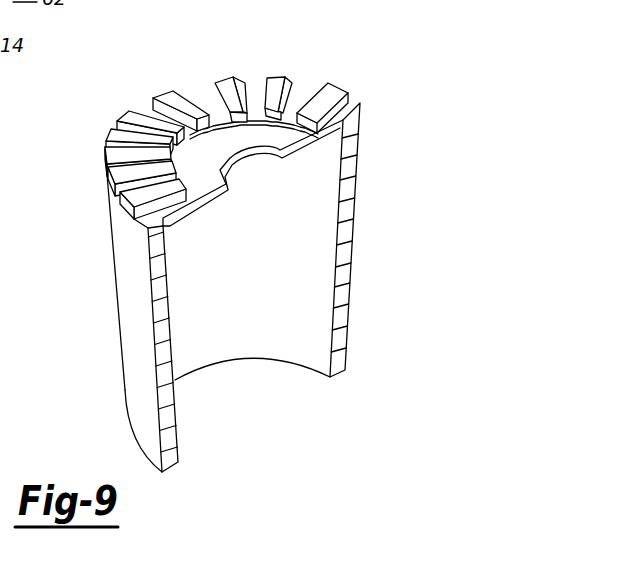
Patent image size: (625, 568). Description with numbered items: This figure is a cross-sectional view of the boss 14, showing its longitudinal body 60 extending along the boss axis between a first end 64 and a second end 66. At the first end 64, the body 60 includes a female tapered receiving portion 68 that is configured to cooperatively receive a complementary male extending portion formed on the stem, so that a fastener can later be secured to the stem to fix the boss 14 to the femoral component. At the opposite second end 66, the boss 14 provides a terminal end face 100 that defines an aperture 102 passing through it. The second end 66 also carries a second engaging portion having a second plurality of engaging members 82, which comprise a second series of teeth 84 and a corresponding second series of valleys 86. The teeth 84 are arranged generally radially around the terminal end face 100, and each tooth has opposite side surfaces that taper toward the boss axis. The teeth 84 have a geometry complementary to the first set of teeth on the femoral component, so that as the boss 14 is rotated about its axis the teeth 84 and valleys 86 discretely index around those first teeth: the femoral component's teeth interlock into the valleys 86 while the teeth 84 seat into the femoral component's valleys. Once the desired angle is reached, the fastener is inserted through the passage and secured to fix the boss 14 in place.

The boss 14 is at (125, 276).
The longitudinal body 60 is at (352, 232).
The first end 64 is at (135, 450).
The second end 66 is at (192, 165).
The female tapered receiving portion 68 is at (330, 145).
The second plurality of engaging members 82 is at (250, 82).
The second series of teeth 84 is at (330, 82).
The second series of valleys 86 is at (306, 92).
The terminal end face 100 is at (211, 140).
The aperture 102 is at (243, 167).